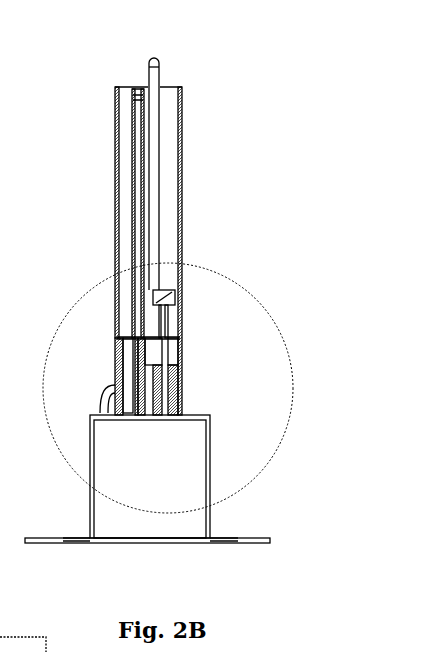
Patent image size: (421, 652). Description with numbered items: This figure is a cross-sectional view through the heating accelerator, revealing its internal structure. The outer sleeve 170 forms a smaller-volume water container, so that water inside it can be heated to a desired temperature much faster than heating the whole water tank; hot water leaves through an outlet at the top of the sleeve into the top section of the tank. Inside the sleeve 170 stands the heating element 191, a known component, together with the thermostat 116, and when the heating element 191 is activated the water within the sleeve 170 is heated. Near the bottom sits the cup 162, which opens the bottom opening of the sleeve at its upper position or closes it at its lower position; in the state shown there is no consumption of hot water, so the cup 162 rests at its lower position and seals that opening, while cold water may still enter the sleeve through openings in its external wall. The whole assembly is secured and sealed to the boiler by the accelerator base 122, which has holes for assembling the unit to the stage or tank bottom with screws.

The thermostat 116 is at (157, 77).
The accelerator base 122 is at (272, 540).
The cup 162 is at (120, 338).
The sleeve 170 is at (183, 155).
The heating element 191 is at (137, 122).